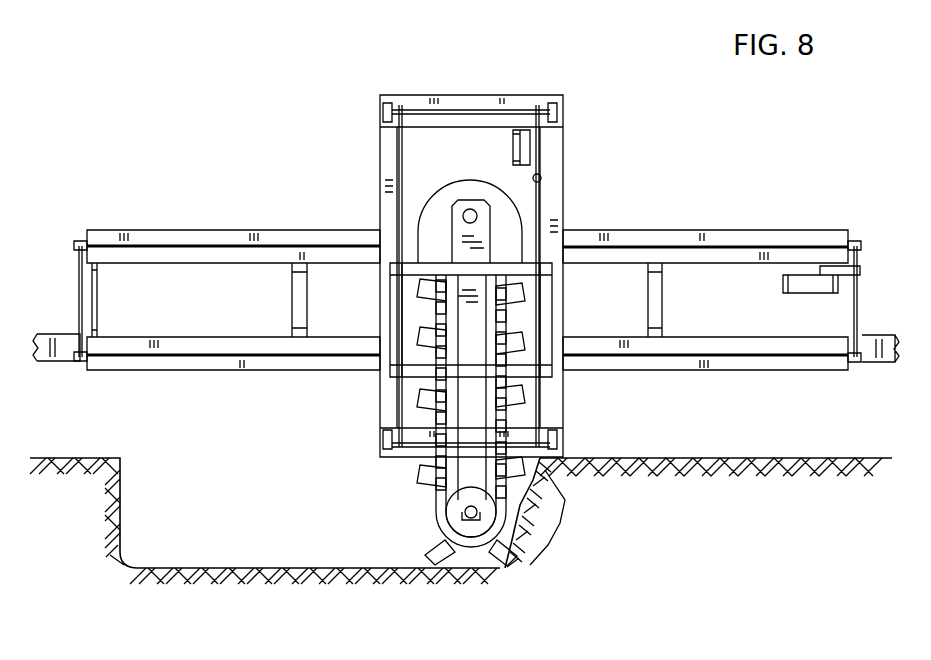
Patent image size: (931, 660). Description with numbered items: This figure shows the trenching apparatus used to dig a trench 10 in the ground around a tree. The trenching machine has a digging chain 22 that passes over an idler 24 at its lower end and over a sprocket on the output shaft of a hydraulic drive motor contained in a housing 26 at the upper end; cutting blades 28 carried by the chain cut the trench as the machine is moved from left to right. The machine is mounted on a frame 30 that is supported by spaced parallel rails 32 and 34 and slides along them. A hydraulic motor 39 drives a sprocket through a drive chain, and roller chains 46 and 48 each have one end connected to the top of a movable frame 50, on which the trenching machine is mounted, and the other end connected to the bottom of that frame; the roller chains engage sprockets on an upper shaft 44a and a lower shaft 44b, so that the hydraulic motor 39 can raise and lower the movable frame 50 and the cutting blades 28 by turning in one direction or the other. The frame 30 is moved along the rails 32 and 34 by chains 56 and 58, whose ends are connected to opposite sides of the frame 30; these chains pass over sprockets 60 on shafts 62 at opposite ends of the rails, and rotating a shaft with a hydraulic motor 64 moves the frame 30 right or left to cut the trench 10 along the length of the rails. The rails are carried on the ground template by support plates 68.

The trench 10 is at (205, 517).
The chain 22 is at (430, 517).
The idler 24 is at (462, 532).
The housing 26 is at (512, 226).
The cutting blades 28 is at (548, 518).
The frame 30 is at (380, 148).
The rail 32 is at (732, 372).
The rail 34 is at (712, 231).
The hydraulic motor 39 is at (513, 149).
The upper shaft 44a is at (472, 109).
The lower shaft 44b is at (398, 462).
The roller chain 46 is at (403, 164).
The roller chain 48 is at (543, 181).
The movable frame 50 is at (552, 291).
The chain 56 is at (780, 246).
The chain 58 is at (672, 362).
The sprockets 60 is at (78, 247).
The shafts 62 is at (77, 293).
The hydraulic motor 64 is at (806, 288).
The support plates 68 is at (97, 305).